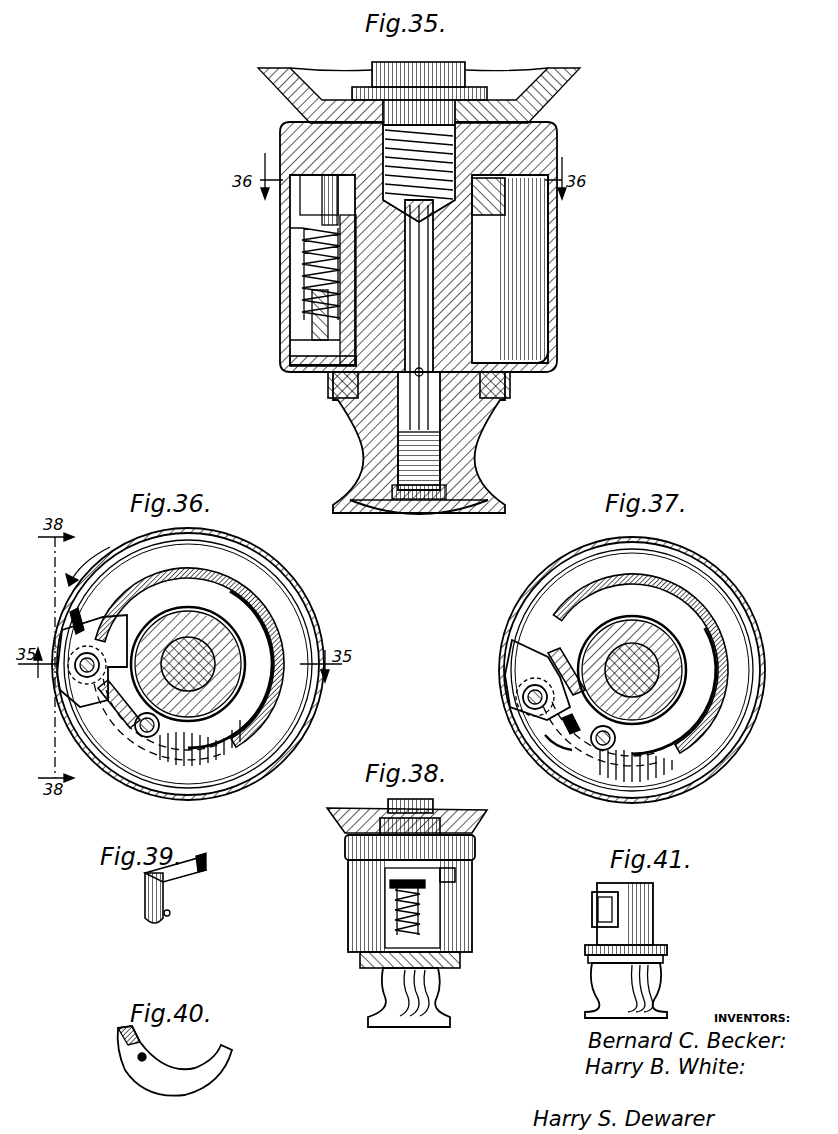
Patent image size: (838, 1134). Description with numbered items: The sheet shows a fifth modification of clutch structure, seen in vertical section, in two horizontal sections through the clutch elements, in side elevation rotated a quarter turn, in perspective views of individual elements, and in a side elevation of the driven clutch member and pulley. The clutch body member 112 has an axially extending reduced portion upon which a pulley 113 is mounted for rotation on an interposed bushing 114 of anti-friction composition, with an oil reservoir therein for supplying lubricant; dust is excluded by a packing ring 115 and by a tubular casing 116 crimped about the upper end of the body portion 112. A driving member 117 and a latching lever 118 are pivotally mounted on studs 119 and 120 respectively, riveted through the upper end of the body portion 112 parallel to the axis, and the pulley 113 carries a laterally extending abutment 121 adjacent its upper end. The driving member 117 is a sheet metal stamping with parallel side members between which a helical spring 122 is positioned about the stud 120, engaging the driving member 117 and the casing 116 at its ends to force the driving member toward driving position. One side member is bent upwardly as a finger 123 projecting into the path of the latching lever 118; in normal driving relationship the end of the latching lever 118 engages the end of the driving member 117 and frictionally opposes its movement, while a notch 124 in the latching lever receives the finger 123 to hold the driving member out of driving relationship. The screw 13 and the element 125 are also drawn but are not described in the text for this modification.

In FIG. 35, the screw 13 is at (463, 73).
In FIG. 36, the screw 13 is at (230, 642).
In FIG. 37, the screw 13 is at (670, 633).
In FIG. 38, the screw 13 is at (433, 807).
In FIG. 35, the clutch body member 112 is at (537, 153).
In FIG. 38, the clutch body member 112 is at (480, 852).
In FIG. 35, the pulley 113 is at (487, 420).
In FIG. 38, the pulley 113 is at (447, 998).
In FIG. 41, the pulley 113 is at (655, 985).
In FIG. 35, the bushing 114 is at (447, 320).
In FIG. 35, the packing ring 115 is at (497, 408).
In FIG. 36, the packing ring 115 is at (223, 633).
In FIG. 37, the packing ring 115 is at (723, 648).
In FIG. 38, the packing ring 115 is at (383, 970).
In FIG. 35, the tubular casing 116 is at (550, 283).
In FIG. 36, the tubular casing 116 is at (310, 623).
In FIG. 37, the tubular casing 116 is at (703, 555).
In FIG. 38, the tubular casing 116 is at (475, 913).
In FIG. 35, the driving member 117 is at (283, 342).
In FIG. 36, the driving member 117 is at (65, 700).
In FIG. 37, the driving member 117 is at (507, 648).
In FIG. 39, the driving member 117 is at (145, 897).
In FIG. 35, the latching lever 118 is at (497, 203).
In FIG. 36, the latching lever 118 is at (205, 755).
In FIG. 37, the latching lever 118 is at (675, 775).
In FIG. 40, the latching lever 118 is at (175, 1083).
In FIG. 35, the stud 119 is at (307, 178).
In FIG. 36, the stud 119 is at (80, 667).
In FIG. 37, the stud 119 is at (518, 693).
In FIG. 36, the stud 120 is at (143, 737).
In FIG. 37, the stud 120 is at (600, 752).
In FIG. 35, the abutment 121 is at (302, 270).
In FIG. 36, the abutment 121 is at (103, 737).
In FIG. 37, the abutment 121 is at (567, 668).
In FIG. 38, the abutment 121 is at (438, 923).
In FIG. 41, the abutment 121 is at (592, 914).
In FIG. 35, the helical spring 122 is at (300, 293).
In FIG. 36, the helical spring 122 is at (75, 622).
In FIG. 37, the finger 123 is at (566, 727).
In FIG. 38, the finger 123 is at (470, 873).
In FIG. 39, the finger 123 is at (208, 866).
In FIG. 37, the notch 124 is at (557, 753).
In FIG. 40, the notch 124 is at (118, 1033).
In FIG. 35, the cap plate 125 is at (297, 368).